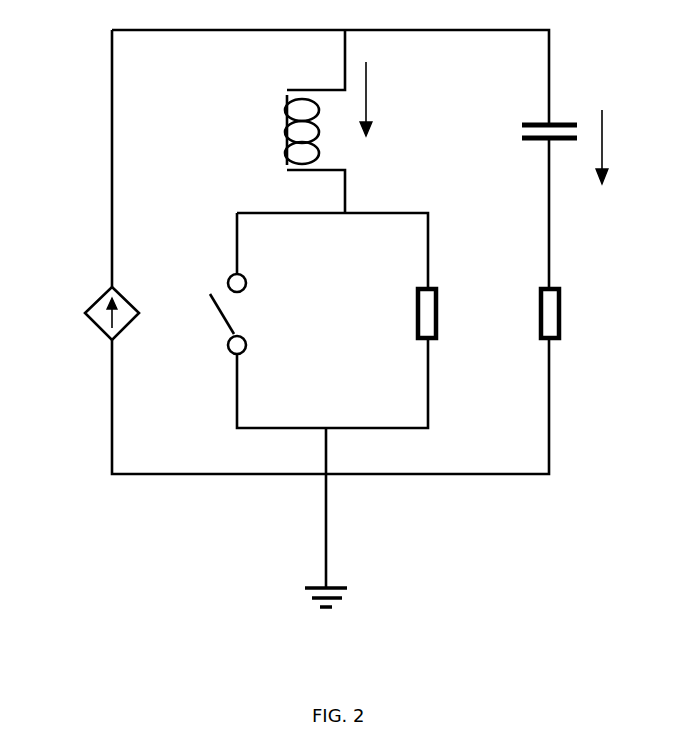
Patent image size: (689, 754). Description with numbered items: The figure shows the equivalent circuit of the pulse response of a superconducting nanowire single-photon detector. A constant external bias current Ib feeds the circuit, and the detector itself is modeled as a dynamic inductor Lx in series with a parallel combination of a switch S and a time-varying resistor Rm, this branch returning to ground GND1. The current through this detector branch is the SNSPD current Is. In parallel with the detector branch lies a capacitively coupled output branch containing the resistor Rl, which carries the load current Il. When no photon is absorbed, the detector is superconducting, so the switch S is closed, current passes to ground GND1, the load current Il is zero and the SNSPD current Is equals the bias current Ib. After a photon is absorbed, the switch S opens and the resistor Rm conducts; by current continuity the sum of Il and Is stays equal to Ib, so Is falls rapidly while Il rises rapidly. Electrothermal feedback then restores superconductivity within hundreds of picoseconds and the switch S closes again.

The dynamic inductor Lx is at (286, 130).
The SNSPD current Is is at (378, 99).
The load current Il is at (620, 147).
The external bias current Ib is at (60, 214).
The switch S is at (237, 314).
The time-varying resistor Rm is at (407, 313).
The load resistor Rl is at (532, 313).
The ground GND1 is at (353, 585).